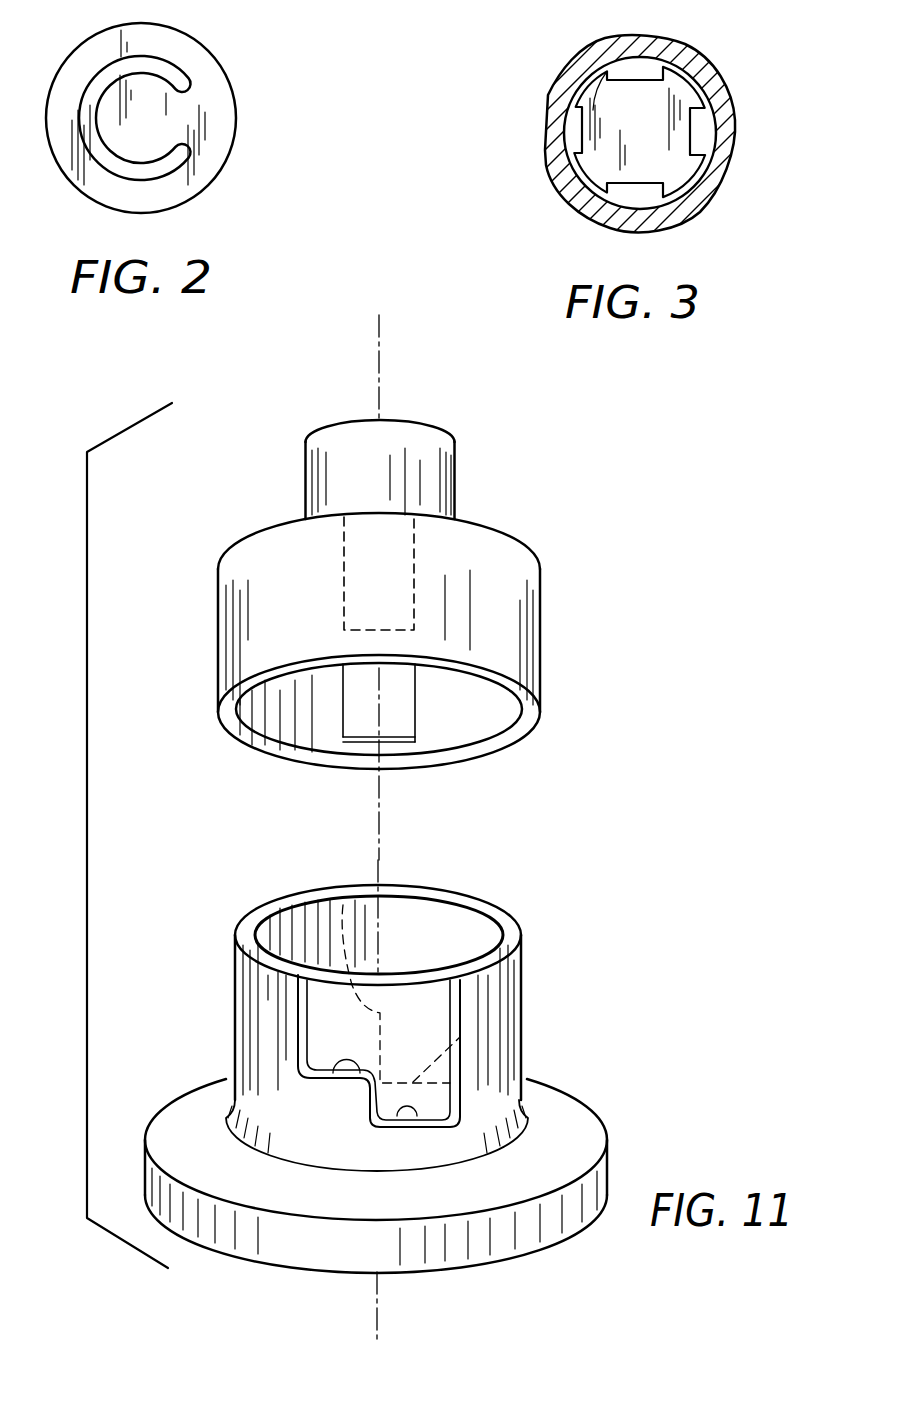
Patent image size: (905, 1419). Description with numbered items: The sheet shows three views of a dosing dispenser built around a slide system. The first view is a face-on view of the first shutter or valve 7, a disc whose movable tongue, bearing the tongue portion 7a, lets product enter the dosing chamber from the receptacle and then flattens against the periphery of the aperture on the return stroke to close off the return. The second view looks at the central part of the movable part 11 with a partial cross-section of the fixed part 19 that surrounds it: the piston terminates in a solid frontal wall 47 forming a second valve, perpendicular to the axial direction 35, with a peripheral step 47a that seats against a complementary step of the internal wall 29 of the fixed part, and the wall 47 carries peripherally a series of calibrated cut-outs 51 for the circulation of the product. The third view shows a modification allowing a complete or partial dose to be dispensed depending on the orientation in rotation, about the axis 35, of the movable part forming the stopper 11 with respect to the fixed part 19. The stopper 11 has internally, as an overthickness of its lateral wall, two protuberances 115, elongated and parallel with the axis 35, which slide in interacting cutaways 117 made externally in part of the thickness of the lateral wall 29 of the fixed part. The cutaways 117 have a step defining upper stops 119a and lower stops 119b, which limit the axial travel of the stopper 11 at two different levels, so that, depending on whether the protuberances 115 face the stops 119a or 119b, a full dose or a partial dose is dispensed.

In FIG. 2, the first shutter or valve 7 is at (168, 52).
In FIG. 2, the C-shaped spring clip 7a is at (157, 115).
In FIG. 3, the movable part 11 is at (622, 189).
In FIG. 11, the movable part 11 is at (488, 520).
In FIG. 3, the fixed part 19 is at (717, 65).
In FIG. 11, the fixed part 19 is at (599, 1106).
In FIG. 3, the internal wall 29 is at (722, 102).
In FIG. 11, the internal wall 29 is at (250, 1004).
In FIG. 11, the general axial direction 35 is at (377, 1297).
In FIG. 3, the solid frontal wall 47 is at (612, 112).
In FIG. 3, the peripheral step 47a is at (592, 163).
In FIG. 3, the calibrated cut-outs 51 is at (697, 140).
In FIG. 11, the protuberances 115 is at (362, 577).
In FIG. 11, the cutaways 117 is at (423, 933).
In FIG. 11, the upper stops 119a is at (345, 905).
In FIG. 11, the lower stops 119b is at (460, 1037).